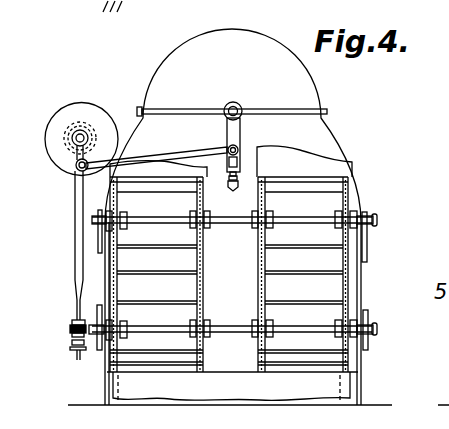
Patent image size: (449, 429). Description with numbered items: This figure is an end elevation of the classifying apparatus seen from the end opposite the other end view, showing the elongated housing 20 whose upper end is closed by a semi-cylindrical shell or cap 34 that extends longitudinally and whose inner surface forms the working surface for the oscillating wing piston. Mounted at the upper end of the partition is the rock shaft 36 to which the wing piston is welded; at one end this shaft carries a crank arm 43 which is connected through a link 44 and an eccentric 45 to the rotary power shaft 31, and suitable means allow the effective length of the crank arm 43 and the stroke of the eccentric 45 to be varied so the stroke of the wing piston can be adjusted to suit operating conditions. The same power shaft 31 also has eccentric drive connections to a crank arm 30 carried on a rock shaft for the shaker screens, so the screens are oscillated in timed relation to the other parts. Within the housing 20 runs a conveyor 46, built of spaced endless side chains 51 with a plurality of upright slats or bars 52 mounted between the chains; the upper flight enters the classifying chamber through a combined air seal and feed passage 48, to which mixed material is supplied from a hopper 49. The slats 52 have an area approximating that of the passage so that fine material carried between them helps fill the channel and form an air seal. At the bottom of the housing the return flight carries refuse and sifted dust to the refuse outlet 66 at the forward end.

The housing 20 is at (333, 141).
The crank arm 30 is at (70, 338).
The rotary power shaft 31 is at (83, 138).
The semi-cylindrical shell or cap 34 is at (303, 83).
The rock shaft 36 is at (240, 105).
The crank arm 43 is at (243, 137).
The link 44 is at (157, 170).
The eccentric 45 is at (78, 168).
The conveyor 46 is at (259, 268).
The combined air seal and feed passage 48 is at (188, 180).
The hopper 49 is at (112, 171).
The endless side chains 51 is at (117, 287).
The upright slats or bars 52 is at (176, 271).
The refuse outlet 66 is at (243, 390).